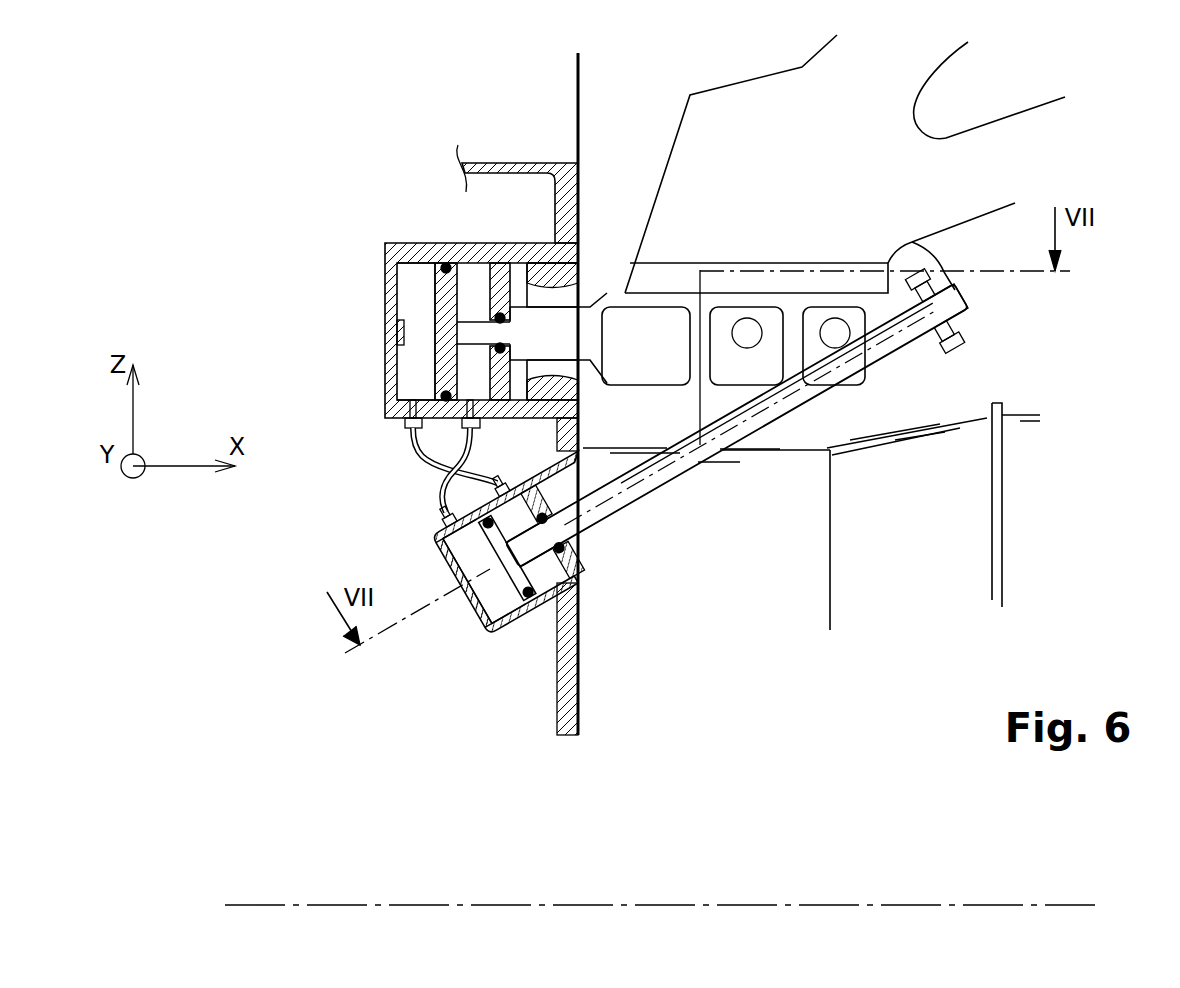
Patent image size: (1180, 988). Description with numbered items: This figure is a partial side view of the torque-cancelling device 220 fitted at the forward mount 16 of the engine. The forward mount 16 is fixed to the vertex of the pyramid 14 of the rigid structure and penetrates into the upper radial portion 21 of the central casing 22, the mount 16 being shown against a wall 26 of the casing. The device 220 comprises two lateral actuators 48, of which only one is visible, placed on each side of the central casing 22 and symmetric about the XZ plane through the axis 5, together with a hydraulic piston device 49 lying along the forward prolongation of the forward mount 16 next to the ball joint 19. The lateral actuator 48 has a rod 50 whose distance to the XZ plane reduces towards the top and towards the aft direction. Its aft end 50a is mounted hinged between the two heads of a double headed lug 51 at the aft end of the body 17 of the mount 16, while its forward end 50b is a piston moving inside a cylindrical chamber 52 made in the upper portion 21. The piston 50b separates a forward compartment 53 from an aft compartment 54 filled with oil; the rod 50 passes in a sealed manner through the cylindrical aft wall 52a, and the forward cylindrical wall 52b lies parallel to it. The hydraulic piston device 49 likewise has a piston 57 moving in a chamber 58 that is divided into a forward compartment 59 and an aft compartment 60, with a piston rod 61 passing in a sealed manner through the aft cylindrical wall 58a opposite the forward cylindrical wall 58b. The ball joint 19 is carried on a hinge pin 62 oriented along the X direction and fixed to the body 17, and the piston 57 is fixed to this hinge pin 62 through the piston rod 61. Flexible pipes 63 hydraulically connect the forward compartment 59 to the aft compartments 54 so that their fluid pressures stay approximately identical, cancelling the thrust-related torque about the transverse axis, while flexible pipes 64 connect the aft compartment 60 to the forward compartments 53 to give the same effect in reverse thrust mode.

The axis 5 is at (860, 907).
The pyramid 14 is at (708, 153).
The forward mount 16 is at (753, 285).
The body 17 is at (667, 360).
The ball joint 19 is at (562, 295).
The upper radial portion 21 is at (490, 152).
The central casing 22 is at (957, 497).
The wall 26 is at (580, 93).
The lateral actuator 48 is at (536, 503).
The hydraulic piston device 49 is at (455, 288).
The rod 50 is at (736, 426).
The aft end 50a is at (949, 303).
The forward end 50b is at (529, 545).
The double headed lug 51 is at (940, 273).
The chamber 52 is at (359, 606).
The cylindrical aft wall 52a is at (553, 531).
The forward cylindrical wall 52b is at (464, 583).
The forward compartment 53 is at (484, 571).
The aft compartment 54 is at (507, 558).
The piston 57 is at (435, 292).
The chamber 58 is at (413, 272).
The aft cylindrical wall 58a is at (503, 278).
The forward cylindrical wall 58b is at (400, 322).
The forward compartment 59 is at (420, 363).
The aft compartment 60 is at (473, 283).
The piston rod 61 is at (423, 383).
The hinge pin 62 is at (577, 405).
The flexible pipes 63 is at (420, 453).
The flexible pipes 64 is at (438, 497).
The device 220 is at (751, 508).